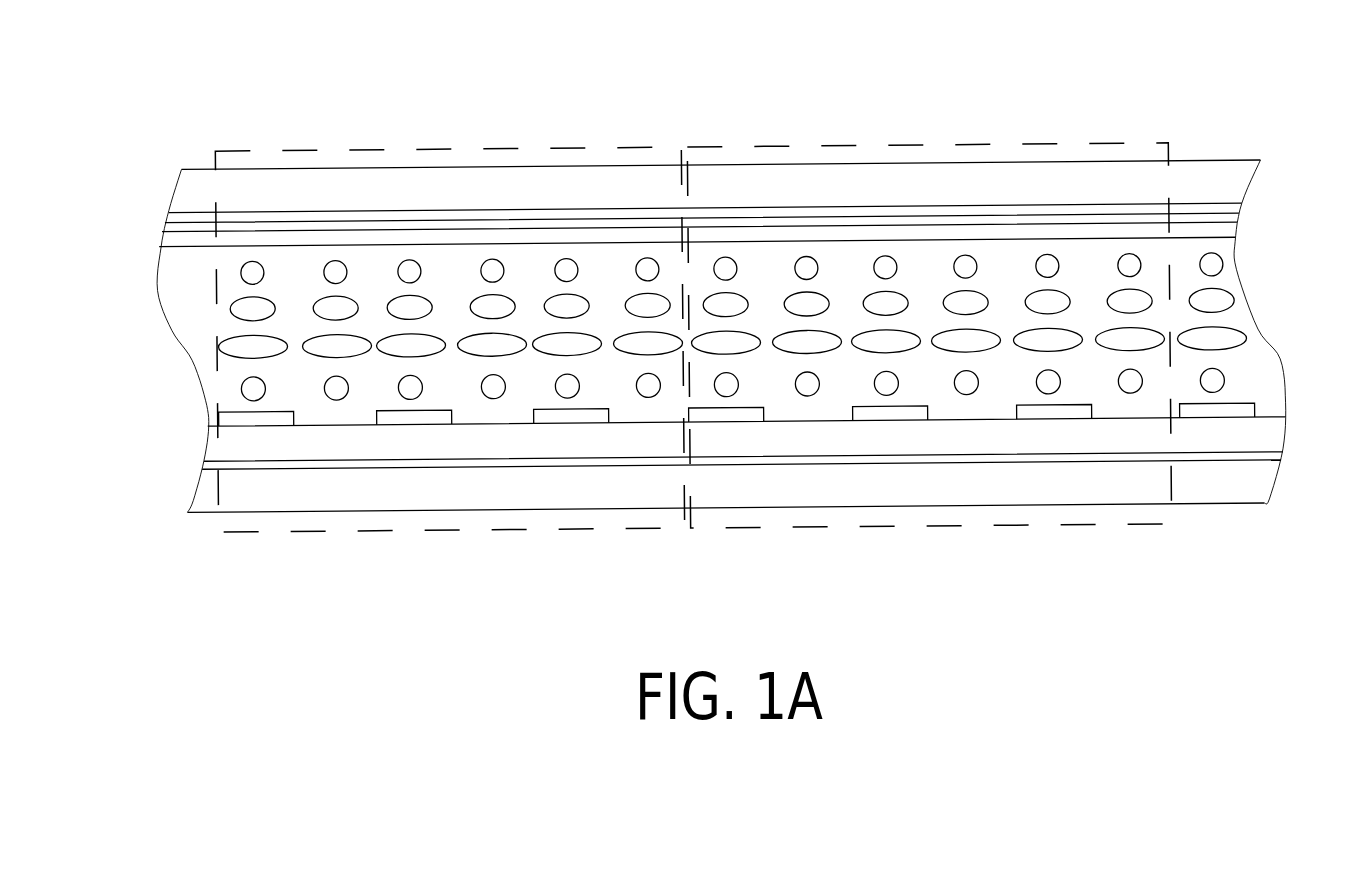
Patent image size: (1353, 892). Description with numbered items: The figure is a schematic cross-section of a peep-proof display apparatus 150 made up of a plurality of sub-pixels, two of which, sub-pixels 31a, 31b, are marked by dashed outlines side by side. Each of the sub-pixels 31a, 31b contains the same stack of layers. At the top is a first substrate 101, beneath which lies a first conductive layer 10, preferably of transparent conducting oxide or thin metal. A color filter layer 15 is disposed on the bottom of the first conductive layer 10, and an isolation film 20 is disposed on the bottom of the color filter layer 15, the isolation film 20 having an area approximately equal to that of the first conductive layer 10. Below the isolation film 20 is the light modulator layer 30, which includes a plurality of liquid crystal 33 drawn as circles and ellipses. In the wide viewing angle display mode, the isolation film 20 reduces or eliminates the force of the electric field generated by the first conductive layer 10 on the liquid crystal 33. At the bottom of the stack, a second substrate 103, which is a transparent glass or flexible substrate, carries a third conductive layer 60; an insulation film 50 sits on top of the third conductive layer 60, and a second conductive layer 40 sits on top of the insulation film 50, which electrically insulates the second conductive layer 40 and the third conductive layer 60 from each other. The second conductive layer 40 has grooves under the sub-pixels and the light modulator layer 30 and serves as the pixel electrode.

The first conductive layer 10 is at (1232, 209).
The color filter layer 15 is at (1236, 221).
The isolation film 20 is at (1240, 233).
The light modulator layer 30 is at (217, 408).
The liquid crystal 33 is at (1233, 340).
The second conductive layer 40 is at (1242, 413).
The insulation film 50 is at (210, 436).
The third conductive layer 60 is at (1268, 458).
The first substrate 101 is at (975, 192).
The second substrate 103 is at (848, 491).
The sub-pixel 31a is at (381, 142).
The sub-pixel 31b is at (834, 146).
The peep-proof display apparatus 150 is at (1340, 605).